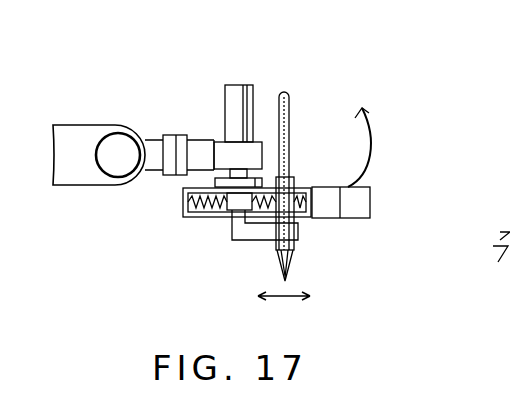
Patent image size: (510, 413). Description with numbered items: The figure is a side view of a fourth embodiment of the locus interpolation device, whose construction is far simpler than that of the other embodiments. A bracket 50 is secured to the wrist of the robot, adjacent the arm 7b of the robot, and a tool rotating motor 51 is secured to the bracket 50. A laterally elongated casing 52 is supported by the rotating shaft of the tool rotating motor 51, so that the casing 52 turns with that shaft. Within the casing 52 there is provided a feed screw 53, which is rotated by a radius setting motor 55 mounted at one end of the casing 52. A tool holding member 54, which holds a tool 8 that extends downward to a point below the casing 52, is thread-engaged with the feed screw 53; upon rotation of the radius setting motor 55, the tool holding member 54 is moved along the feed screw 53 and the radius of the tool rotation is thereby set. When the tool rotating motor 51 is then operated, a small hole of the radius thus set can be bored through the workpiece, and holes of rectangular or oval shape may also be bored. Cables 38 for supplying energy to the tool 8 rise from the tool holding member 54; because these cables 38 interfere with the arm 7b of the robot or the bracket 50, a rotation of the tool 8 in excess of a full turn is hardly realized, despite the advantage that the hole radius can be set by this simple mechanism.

The arm 7b is at (75, 135).
The bracket 50 is at (198, 150).
The tool rotating motor 51 is at (238, 92).
The cables 38 is at (291, 118).
The radius setting motor 55 is at (325, 195).
The casing 52 is at (182, 200).
The feed screw 53 is at (213, 208).
The tool holding member 54 is at (250, 233).
The tool 8 is at (291, 264).